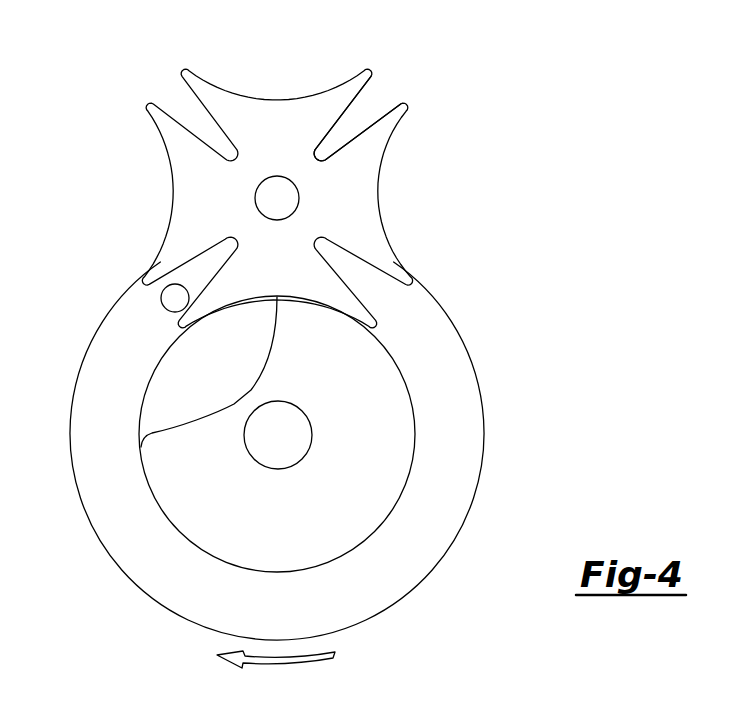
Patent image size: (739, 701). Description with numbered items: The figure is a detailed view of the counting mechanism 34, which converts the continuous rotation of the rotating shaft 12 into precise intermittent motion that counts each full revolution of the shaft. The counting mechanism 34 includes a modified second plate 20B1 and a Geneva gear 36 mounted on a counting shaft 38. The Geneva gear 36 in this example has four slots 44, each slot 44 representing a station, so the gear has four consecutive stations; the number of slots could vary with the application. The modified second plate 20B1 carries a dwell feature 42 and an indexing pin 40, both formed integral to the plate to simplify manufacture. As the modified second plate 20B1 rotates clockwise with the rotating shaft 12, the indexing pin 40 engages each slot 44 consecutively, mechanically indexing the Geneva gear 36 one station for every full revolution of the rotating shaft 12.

The counting mechanism 34 is at (117, 75).
The Geneva gear 36 is at (289, 145).
The counting shaft 38 is at (257, 189).
The slot 44 is at (367, 107).
The indexing pin 40 is at (162, 304).
The modified second plate 20B1 is at (477, 368).
The dwell feature 42 is at (233, 402).
The rotating shaft 12 is at (278, 469).